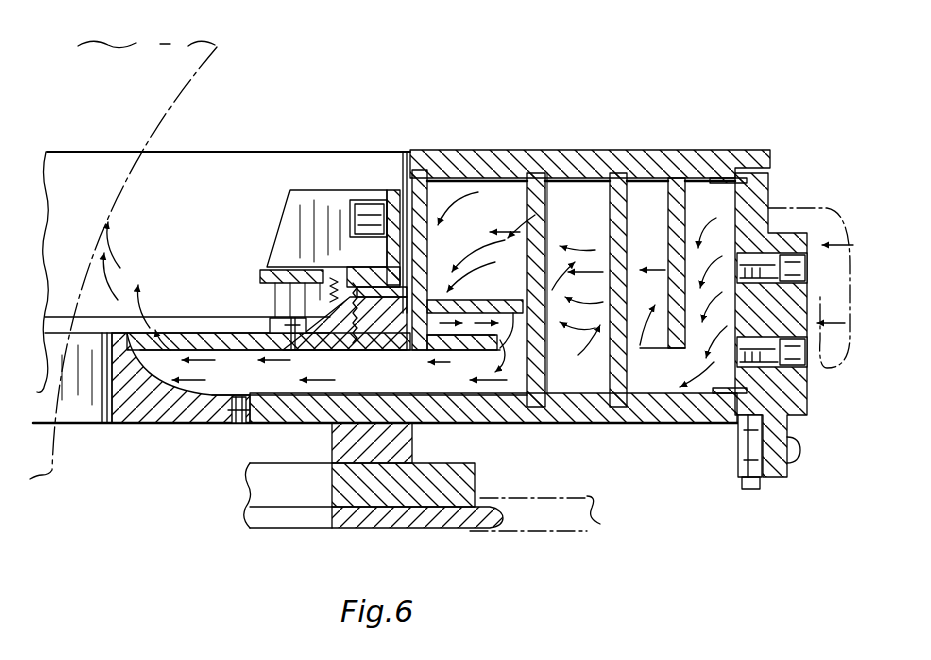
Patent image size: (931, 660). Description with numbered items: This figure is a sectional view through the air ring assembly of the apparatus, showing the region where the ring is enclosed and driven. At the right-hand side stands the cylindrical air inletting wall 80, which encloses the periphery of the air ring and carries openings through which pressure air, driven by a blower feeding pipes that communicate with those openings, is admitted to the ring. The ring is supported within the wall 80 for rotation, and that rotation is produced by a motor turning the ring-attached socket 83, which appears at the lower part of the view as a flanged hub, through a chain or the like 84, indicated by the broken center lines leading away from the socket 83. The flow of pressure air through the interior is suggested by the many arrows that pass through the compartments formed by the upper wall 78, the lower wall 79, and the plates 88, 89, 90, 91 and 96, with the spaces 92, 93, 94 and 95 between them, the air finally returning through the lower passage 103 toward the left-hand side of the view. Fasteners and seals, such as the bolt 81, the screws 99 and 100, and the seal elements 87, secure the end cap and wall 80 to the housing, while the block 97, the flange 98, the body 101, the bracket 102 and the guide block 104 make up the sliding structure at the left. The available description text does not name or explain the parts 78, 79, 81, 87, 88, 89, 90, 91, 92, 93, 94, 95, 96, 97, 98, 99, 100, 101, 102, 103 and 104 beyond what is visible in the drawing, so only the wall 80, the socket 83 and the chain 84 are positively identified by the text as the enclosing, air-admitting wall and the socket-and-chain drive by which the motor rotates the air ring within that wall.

The housing top wall 78 is at (568, 152).
The housing bottom wall 79 is at (625, 424).
The air inletting wall 80 is at (762, 195).
The bolt 81 is at (748, 455).
The ring-attached socket 83 is at (450, 522).
The chain 84 is at (551, 533).
The seal 87 is at (730, 178).
The partition plate 88 is at (683, 205).
The baffle chamber 89 is at (648, 268).
The partition wall 90 is at (546, 208).
The baffle plate 91 is at (613, 338).
The chamber 92 is at (546, 215).
The inlet chamber 93 is at (491, 249).
The inlet passage 94 is at (428, 200).
The passage shelf 95 is at (517, 298).
The wall passage 96 is at (465, 352).
The base block 97 is at (140, 417).
The flange 98 is at (212, 323).
The screw 99 is at (233, 426).
The screw 100 is at (290, 315).
The slider body 101 is at (300, 200).
The bracket 102 is at (262, 266).
The return channel 103 is at (390, 343).
The guide block 104 is at (352, 204).